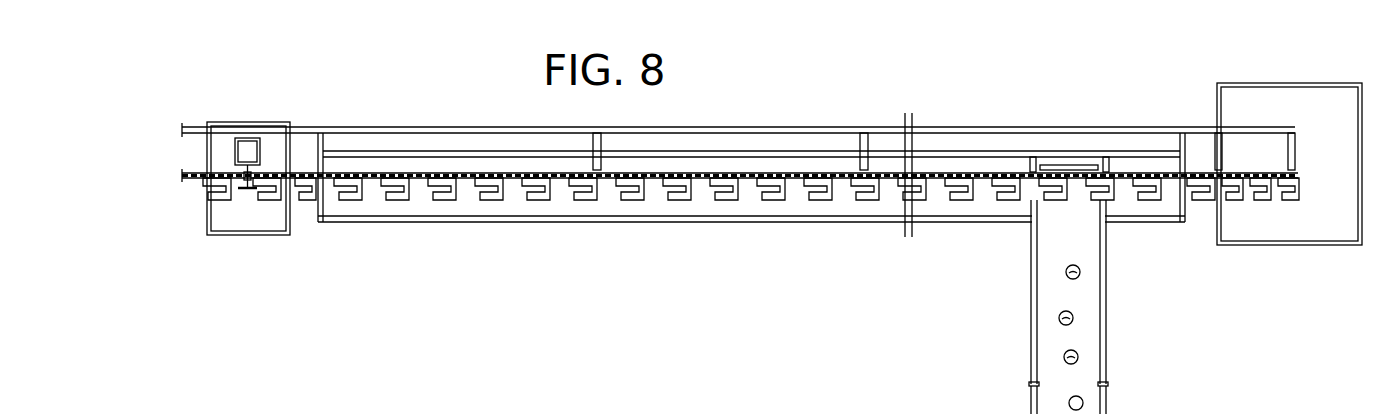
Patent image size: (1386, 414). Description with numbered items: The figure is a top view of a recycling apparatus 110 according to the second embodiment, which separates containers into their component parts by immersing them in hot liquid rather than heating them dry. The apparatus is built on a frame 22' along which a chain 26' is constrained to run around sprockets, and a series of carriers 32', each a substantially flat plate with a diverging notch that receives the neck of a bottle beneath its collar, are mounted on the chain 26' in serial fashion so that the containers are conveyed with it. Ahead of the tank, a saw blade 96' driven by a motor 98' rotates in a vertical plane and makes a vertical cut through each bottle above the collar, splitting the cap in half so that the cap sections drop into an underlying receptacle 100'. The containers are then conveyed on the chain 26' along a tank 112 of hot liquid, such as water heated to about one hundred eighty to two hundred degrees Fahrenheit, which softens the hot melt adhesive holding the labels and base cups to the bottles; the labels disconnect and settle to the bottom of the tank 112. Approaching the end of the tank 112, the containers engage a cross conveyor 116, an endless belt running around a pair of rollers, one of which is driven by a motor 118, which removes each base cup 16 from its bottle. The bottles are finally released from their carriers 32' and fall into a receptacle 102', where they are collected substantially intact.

The recycling apparatus 110 is at (713, 99).
The frame 22' is at (738, 105).
The chain 26' is at (740, 139).
The tank 112 is at (470, 222).
The carriers 32' is at (751, 220).
The receptacle 100' is at (248, 216).
The motor 98' is at (268, 125).
The saw blade 96' is at (230, 219).
The receptacle 102' is at (1289, 196).
The cross conveyor 116 is at (1055, 243).
The motor 118 is at (1008, 413).
The base cup 16 is at (1077, 352).